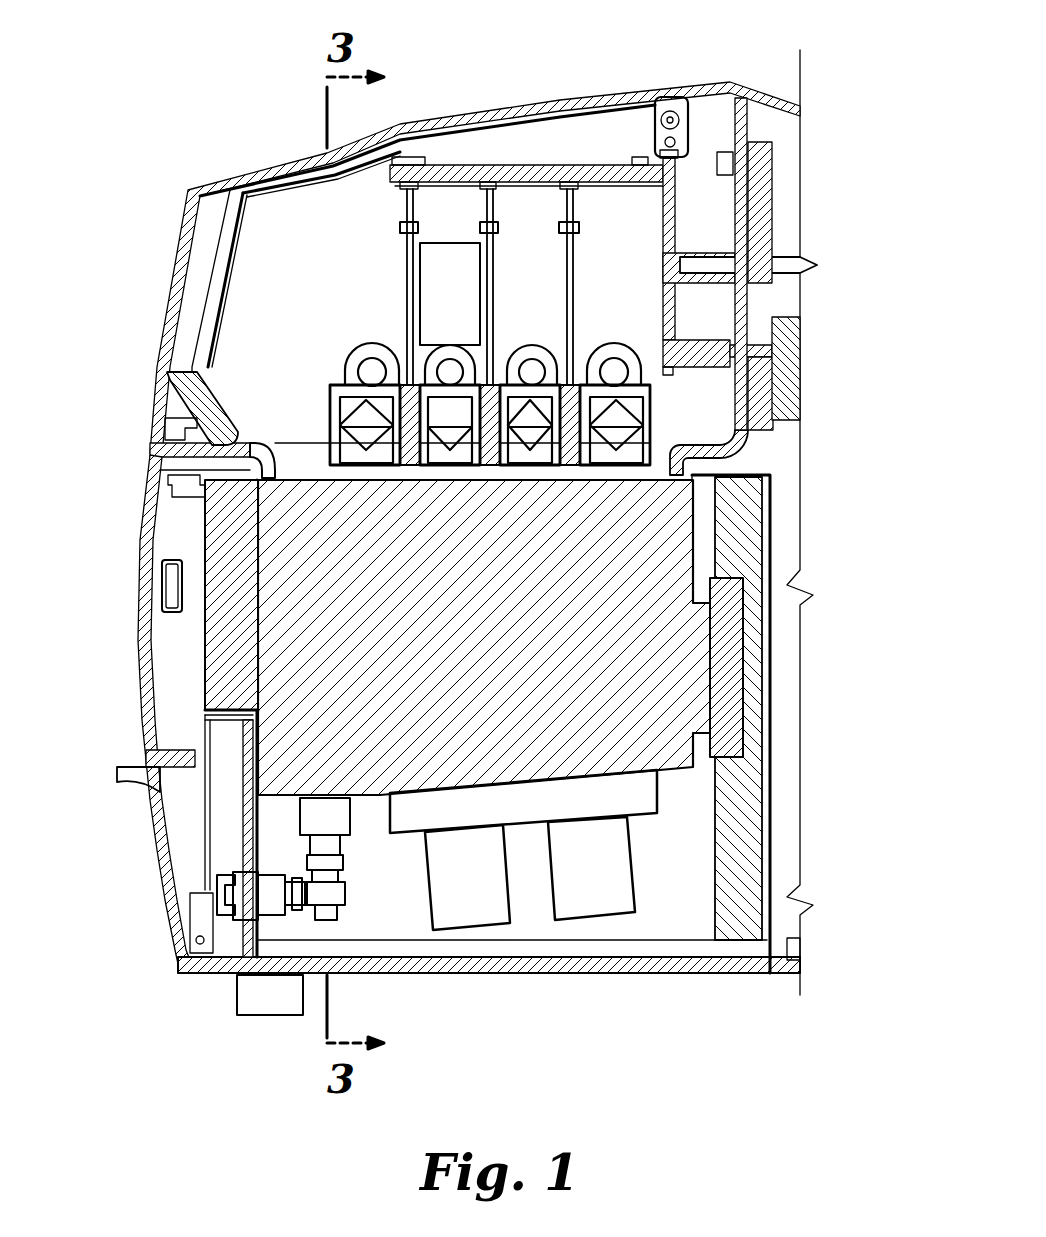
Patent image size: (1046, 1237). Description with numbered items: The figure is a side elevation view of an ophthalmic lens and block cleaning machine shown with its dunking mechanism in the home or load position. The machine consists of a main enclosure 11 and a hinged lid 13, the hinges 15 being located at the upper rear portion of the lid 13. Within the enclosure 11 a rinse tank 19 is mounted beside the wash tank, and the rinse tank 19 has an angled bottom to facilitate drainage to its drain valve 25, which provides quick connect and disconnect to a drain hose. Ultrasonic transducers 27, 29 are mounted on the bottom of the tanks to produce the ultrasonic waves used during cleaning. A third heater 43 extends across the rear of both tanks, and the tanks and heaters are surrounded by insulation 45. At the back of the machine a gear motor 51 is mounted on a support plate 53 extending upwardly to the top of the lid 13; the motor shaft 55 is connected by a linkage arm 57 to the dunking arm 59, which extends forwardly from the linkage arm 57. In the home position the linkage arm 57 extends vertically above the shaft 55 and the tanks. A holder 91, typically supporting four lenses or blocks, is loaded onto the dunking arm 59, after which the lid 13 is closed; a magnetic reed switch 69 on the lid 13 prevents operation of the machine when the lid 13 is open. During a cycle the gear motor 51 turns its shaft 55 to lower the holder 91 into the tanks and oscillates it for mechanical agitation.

The main enclosure 11 is at (148, 615).
The hinged lid 13 is at (176, 270).
The hinges 15 is at (672, 100).
The rinse tank 19 is at (318, 667).
The drain valve 25 is at (285, 897).
The ultrasonic transducer 27 is at (468, 903).
The ultrasonic transducer 29 is at (607, 903).
The third heater 43 is at (728, 660).
The insulation 45 is at (745, 805).
The gear motor 51 is at (793, 358).
The support plate 53 is at (762, 222).
The shaft 55 is at (698, 357).
The linkage arm 57 is at (673, 213).
The dunking arm 59 is at (518, 172).
The magnetic reed switch 69 is at (160, 450).
The holder 91 is at (405, 290).